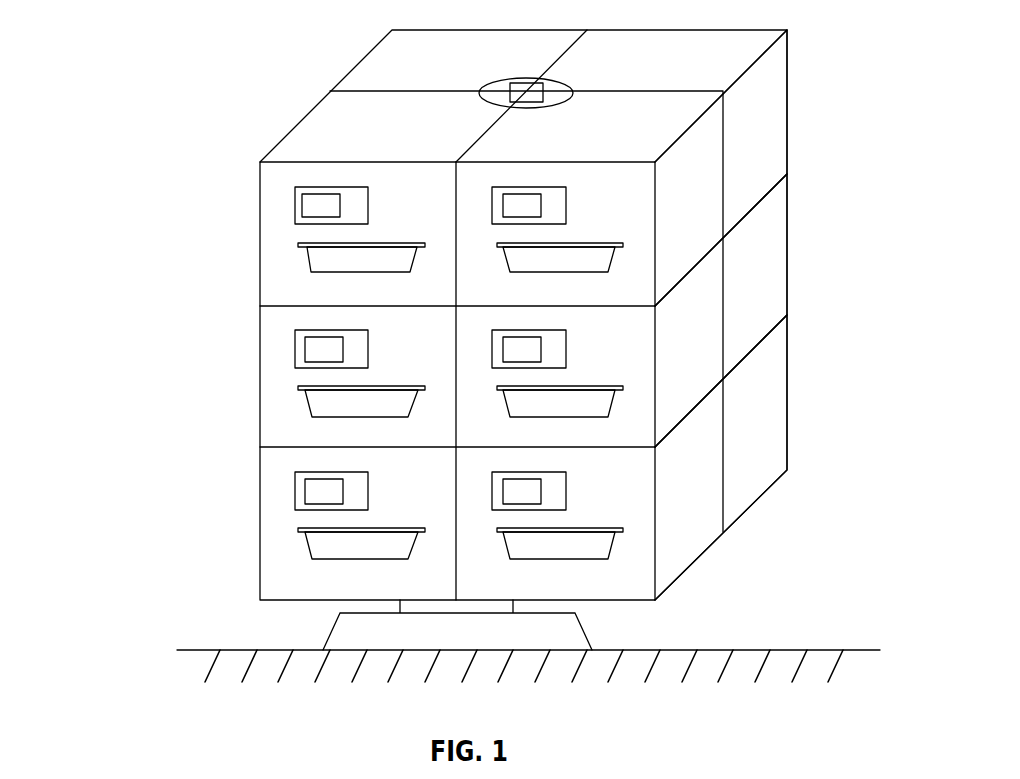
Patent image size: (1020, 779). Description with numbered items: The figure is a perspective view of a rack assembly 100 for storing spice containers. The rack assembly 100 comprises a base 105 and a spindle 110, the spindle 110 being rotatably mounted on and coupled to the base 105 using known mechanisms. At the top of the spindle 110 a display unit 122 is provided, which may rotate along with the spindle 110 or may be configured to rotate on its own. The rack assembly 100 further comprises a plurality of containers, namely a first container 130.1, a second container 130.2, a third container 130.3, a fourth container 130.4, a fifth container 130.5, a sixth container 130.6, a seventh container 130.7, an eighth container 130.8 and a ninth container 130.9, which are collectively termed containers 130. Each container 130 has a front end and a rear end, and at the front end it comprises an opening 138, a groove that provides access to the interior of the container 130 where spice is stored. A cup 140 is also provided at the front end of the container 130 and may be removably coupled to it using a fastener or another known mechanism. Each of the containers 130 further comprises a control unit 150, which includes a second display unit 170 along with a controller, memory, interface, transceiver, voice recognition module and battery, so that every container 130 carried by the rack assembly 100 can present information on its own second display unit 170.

The rack assembly 100 is at (208, 48).
The base 105 is at (352, 636).
The spindle 110 is at (524, 78).
The display unit 122 is at (548, 92).
The containers 130 is at (274, 241).
The first container 130.1 is at (305, 236).
The second container 130.2 is at (283, 422).
The third container 130.3 is at (268, 583).
The fourth container 130.4 is at (596, 177).
The fifth container 130.5 is at (643, 346).
The sixth container 130.6 is at (642, 553).
The seventh container 130.7 is at (772, 128).
The eighth container 130.8 is at (780, 273).
The ninth container 130.9 is at (780, 415).
The opening 138 is at (383, 250).
The cup 140 is at (358, 277).
The control unit 150 is at (288, 169).
The second display unit 170 is at (301, 205).